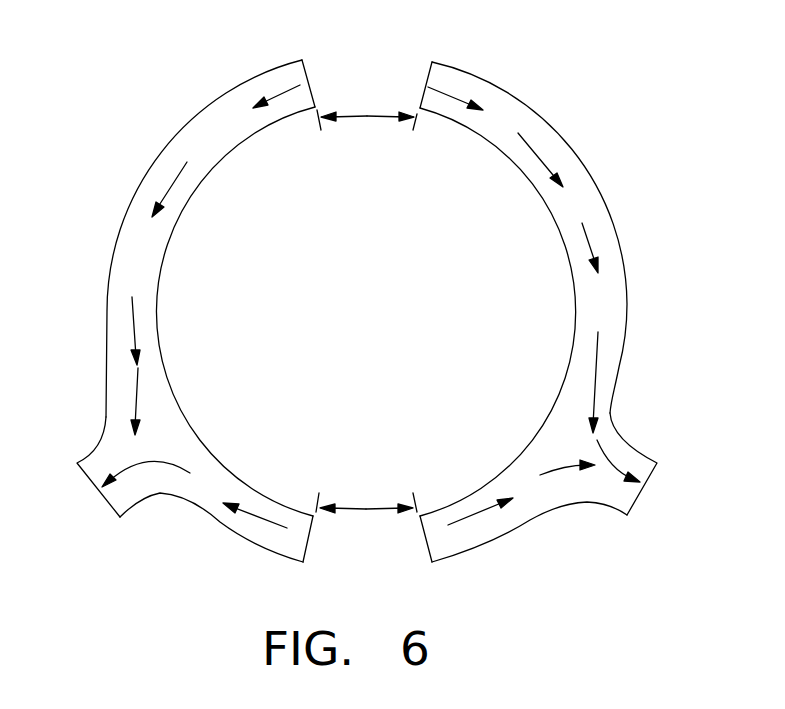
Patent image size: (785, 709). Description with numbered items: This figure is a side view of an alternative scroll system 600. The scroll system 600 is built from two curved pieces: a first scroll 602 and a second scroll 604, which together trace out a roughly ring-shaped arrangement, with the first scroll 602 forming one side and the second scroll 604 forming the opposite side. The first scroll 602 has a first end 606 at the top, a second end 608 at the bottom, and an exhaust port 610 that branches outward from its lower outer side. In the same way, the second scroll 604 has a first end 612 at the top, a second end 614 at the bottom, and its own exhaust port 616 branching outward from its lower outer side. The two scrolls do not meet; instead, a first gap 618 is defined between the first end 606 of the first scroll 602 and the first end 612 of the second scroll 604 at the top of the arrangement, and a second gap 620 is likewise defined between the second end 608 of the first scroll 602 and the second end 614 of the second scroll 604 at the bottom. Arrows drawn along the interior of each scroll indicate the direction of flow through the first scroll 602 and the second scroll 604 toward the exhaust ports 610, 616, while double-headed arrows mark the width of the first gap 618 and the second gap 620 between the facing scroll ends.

The scroll system 600 is at (618, 87).
The first scroll 602 is at (200, 112).
The second scroll 604 is at (500, 90).
The first end 606 is at (307, 72).
The second end 608 is at (306, 559).
The exhaust port 610 is at (100, 490).
The first end 612 is at (428, 72).
The second end 614 is at (422, 557).
The exhaust port 616 is at (640, 495).
The first gap 618 is at (367, 116).
The second gap 620 is at (363, 507).